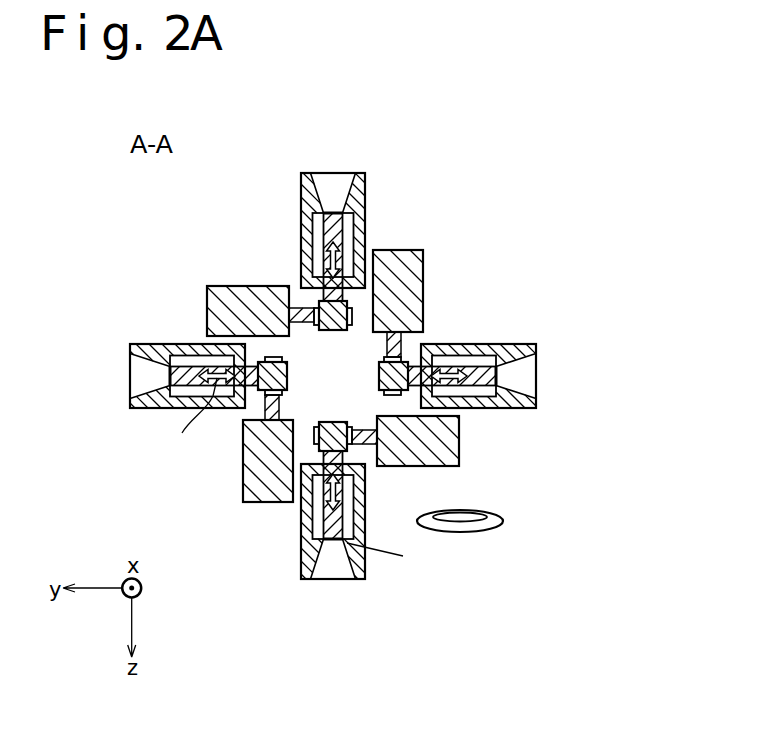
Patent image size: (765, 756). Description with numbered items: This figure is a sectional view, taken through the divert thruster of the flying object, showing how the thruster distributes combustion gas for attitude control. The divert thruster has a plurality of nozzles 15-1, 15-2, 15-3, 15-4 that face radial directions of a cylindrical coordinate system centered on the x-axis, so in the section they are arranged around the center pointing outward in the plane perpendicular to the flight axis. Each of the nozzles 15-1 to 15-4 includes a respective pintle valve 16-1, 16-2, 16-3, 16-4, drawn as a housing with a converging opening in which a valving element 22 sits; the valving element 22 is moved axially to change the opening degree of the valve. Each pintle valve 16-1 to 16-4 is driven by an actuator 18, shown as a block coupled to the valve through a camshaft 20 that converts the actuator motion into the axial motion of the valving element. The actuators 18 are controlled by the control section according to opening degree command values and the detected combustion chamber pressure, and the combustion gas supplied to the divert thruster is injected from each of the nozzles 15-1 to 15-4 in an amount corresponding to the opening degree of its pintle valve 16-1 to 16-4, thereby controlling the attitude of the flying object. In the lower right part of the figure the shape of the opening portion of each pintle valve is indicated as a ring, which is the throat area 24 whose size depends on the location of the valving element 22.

The nozzle 15-1 is at (364, 223).
The nozzle 15-2 is at (498, 344).
The nozzle 15-3 is at (353, 531).
The nozzle 15-4 is at (169, 392).
The pintle valve 16-1 is at (333, 171).
The pintle valve 16-2 is at (537, 377).
The pintle valve 16-3 is at (335, 580).
The pintle valve 16-4 is at (130, 375).
The actuator 18 is at (405, 250).
The camshaft 20 is at (352, 316).
The valving element 22 is at (165, 326).
The throat area 24 is at (460, 510).